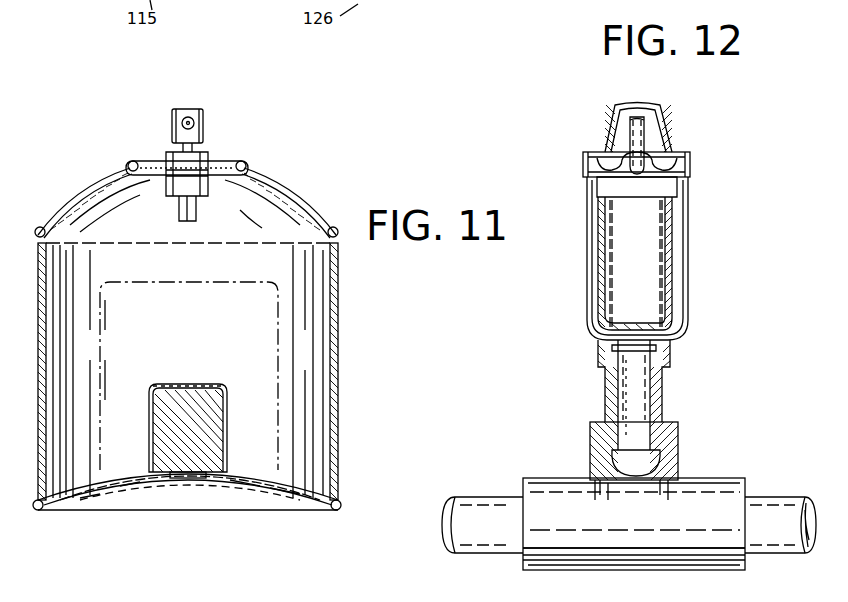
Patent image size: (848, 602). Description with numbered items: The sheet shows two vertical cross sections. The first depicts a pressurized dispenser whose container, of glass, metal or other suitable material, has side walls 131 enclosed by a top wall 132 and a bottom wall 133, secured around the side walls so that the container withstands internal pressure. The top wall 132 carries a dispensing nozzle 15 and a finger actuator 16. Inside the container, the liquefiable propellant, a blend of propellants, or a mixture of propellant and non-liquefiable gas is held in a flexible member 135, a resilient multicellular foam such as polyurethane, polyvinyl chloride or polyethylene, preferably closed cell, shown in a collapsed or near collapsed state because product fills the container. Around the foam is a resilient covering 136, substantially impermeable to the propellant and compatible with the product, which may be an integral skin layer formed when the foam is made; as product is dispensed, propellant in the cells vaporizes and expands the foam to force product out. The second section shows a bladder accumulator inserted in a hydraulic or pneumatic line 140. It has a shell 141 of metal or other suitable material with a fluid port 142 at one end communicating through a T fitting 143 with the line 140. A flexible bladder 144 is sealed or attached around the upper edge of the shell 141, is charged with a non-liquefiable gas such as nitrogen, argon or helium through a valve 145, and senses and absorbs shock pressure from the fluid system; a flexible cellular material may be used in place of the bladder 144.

In FIG. 11, the dispensing nozzle 15 is at (204, 126).
In FIG. 11, the finger actuator 16 is at (172, 126).
In FIG. 11, the side walls 131 is at (337, 292).
In FIG. 11, the top wall 132 is at (280, 192).
In FIG. 11, the bottom wall 133 is at (277, 493).
In FIG. 11, the flexible member 135 is at (212, 398).
In FIG. 11, the resilient covering 136 is at (166, 386).
In FIG. 12, the hydraulic or pneumatic line 140 is at (785, 505).
In FIG. 12, the shell 141 is at (688, 206).
In FIG. 12, the fluid port 142 is at (665, 393).
In FIG. 12, the T fitting 143 is at (720, 492).
In FIG. 12, the flexible bladder 144 is at (672, 293).
In FIG. 12, the valve 145 is at (640, 130).